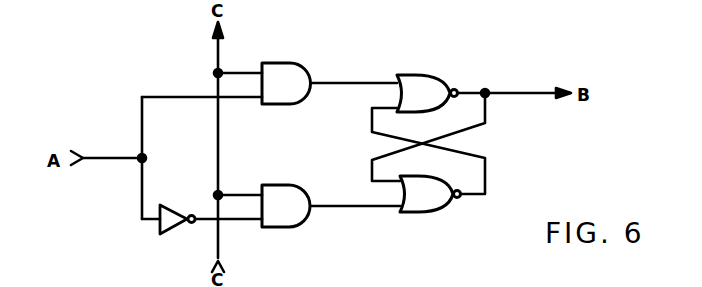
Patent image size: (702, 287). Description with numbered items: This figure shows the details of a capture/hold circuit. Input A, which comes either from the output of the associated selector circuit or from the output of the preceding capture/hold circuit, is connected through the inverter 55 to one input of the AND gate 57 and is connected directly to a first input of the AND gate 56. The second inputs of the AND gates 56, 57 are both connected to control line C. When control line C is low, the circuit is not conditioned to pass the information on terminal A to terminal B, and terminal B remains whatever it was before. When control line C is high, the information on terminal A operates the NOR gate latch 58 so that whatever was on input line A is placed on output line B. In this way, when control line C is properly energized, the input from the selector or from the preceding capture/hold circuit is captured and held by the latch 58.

The inverter 55 is at (165, 205).
The AND gate 56 is at (286, 72).
The AND gate 57 is at (285, 213).
The NOR gate latch 58 is at (449, 117).